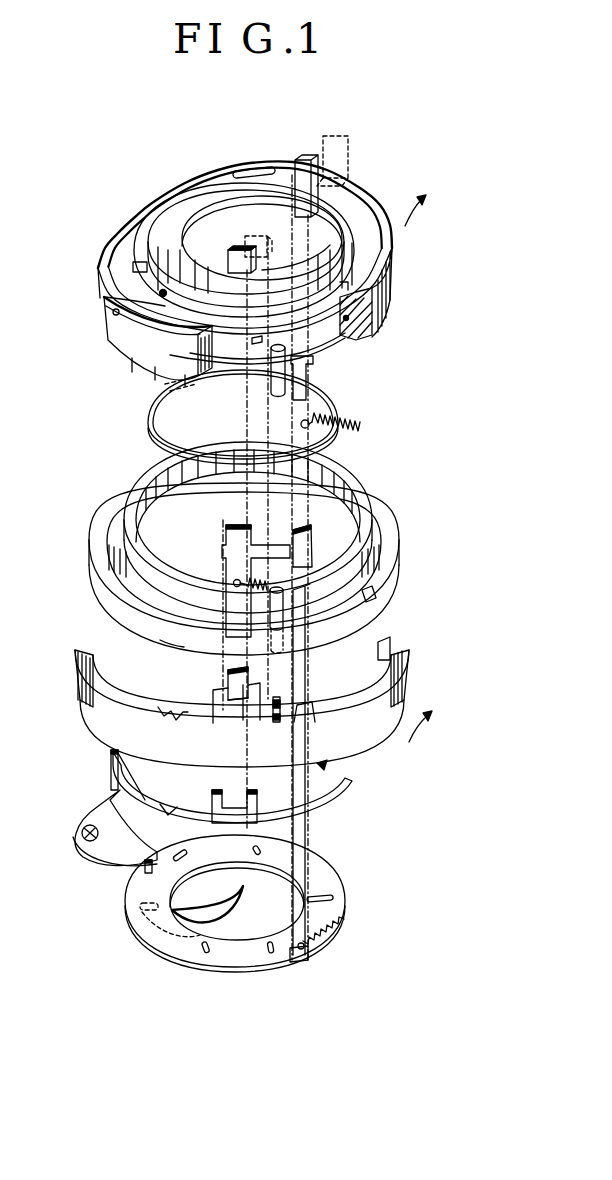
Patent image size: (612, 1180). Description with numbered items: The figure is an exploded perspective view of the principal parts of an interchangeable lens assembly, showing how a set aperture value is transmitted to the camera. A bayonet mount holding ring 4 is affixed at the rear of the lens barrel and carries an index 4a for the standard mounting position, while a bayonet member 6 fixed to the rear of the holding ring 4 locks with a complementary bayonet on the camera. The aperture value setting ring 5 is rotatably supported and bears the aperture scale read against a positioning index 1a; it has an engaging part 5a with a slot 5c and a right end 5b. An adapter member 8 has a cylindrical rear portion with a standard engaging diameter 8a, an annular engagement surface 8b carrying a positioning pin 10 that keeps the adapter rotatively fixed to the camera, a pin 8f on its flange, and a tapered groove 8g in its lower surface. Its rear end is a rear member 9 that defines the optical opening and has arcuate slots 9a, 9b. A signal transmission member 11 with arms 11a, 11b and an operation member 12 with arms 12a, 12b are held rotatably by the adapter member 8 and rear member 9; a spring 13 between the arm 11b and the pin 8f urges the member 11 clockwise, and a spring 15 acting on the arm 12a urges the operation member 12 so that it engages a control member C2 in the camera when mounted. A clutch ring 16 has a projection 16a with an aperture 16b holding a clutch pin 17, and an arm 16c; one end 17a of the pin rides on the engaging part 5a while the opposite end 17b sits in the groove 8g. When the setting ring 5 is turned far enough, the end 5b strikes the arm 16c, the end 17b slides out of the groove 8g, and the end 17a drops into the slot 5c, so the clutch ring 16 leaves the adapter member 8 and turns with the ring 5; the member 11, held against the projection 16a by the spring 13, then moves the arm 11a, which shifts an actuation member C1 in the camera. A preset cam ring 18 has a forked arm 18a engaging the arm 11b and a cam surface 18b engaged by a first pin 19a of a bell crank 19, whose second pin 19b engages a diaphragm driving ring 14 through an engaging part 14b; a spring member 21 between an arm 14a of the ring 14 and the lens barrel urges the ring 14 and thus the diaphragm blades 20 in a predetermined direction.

The positioning index 1a is at (328, 768).
The bayonet mount holding ring 4 is at (150, 372).
The index 4a is at (114, 313).
The aperture value setting ring 5 is at (403, 684).
The engaging part 5a is at (216, 720).
The right end of engaging part 5b is at (310, 712).
The slot 5c is at (178, 710).
The bayonet member 6 is at (128, 270).
The adapter member 8 is at (350, 335).
The standard engaging diameter 8a is at (358, 268).
The annular engagement surface 8b is at (342, 345).
The pin 8f is at (362, 330).
The tapered groove 8g is at (258, 338).
The rear member 9 is at (328, 212).
The arcuate slot 9a is at (272, 172).
The arcuate slot 9b is at (335, 250).
The positioning pin 10 is at (158, 293).
The signal transmission member 11 is at (130, 535).
The arm 11a is at (242, 256).
The second arm 11b is at (228, 670).
The operation member 12 is at (152, 428).
The arm 12a is at (303, 158).
The arm 12b is at (305, 558).
The spring 13 is at (272, 580).
The diaphragm driving ring 14 is at (317, 866).
The arm 14a is at (303, 594).
The engaging part 14b is at (150, 873).
The spring 15 is at (362, 426).
The clutch ring 16 is at (376, 507).
The projection 16a is at (368, 588).
The aperture 16b is at (170, 644).
The arm 16c is at (388, 640).
The clutch pin 17 is at (270, 606).
The forward end of clutch pin 17a is at (293, 722).
The opposite end of clutch pin 17b is at (300, 363).
The preset cam ring 18 is at (323, 796).
The forked arm 18a is at (218, 792).
The cam surface 18b is at (134, 803).
The bell crank 19 is at (105, 848).
The first pin 19a is at (110, 768).
The second pin 19b is at (145, 867).
The diaphragm blades 20 is at (233, 908).
The spring member 21 is at (343, 925).
The actuation member C1 is at (257, 236).
The control member C2 is at (346, 150).